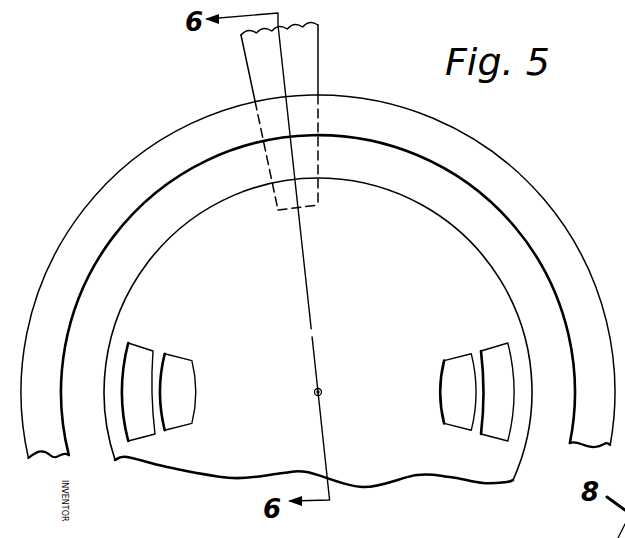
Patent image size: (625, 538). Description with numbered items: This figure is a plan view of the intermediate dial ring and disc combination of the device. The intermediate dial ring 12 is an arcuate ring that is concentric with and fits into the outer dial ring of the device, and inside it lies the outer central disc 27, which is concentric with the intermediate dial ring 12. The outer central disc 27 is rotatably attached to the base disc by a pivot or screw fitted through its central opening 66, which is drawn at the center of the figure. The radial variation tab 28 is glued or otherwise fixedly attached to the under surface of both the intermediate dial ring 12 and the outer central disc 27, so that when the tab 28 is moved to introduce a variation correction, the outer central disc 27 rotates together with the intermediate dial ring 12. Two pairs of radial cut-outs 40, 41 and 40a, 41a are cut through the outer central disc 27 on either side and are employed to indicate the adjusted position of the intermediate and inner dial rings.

The intermediate dial ring 12 is at (537, 205).
The outer central disc 27 is at (409, 460).
The radial variation tab 28 is at (305, 62).
The central opening 66 is at (322, 389).
The radial cut-out 40 is at (140, 430).
The radial cut-out 41 is at (180, 422).
The radial cut-out 41a is at (460, 418).
The radial cut-out 40a is at (502, 430).